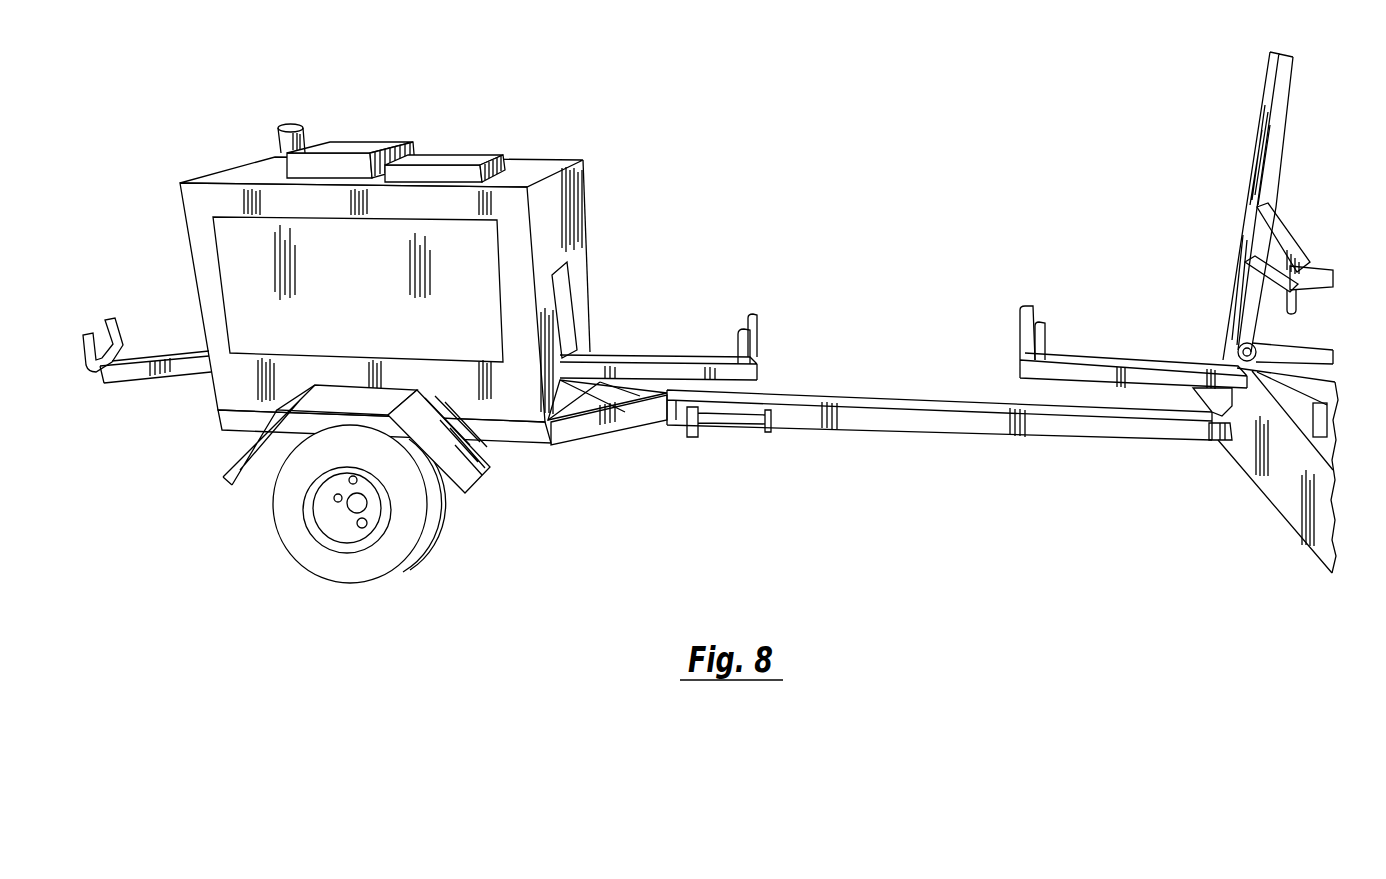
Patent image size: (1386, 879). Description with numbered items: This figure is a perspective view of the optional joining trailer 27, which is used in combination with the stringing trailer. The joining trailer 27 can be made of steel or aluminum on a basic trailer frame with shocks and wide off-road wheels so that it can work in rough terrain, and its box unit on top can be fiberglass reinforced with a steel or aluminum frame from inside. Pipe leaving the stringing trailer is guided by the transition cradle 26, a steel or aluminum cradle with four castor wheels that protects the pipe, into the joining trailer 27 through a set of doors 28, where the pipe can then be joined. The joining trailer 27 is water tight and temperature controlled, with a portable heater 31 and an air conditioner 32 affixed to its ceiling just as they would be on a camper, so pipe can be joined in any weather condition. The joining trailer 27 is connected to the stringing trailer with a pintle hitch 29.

The joining trailer 27 is at (258, 178).
The heater 31 is at (364, 145).
The air conditioner 32 is at (450, 155).
The doors 28 is at (567, 300).
The transition cradle 26 is at (758, 340).
The pintle hitch 29 is at (1216, 442).